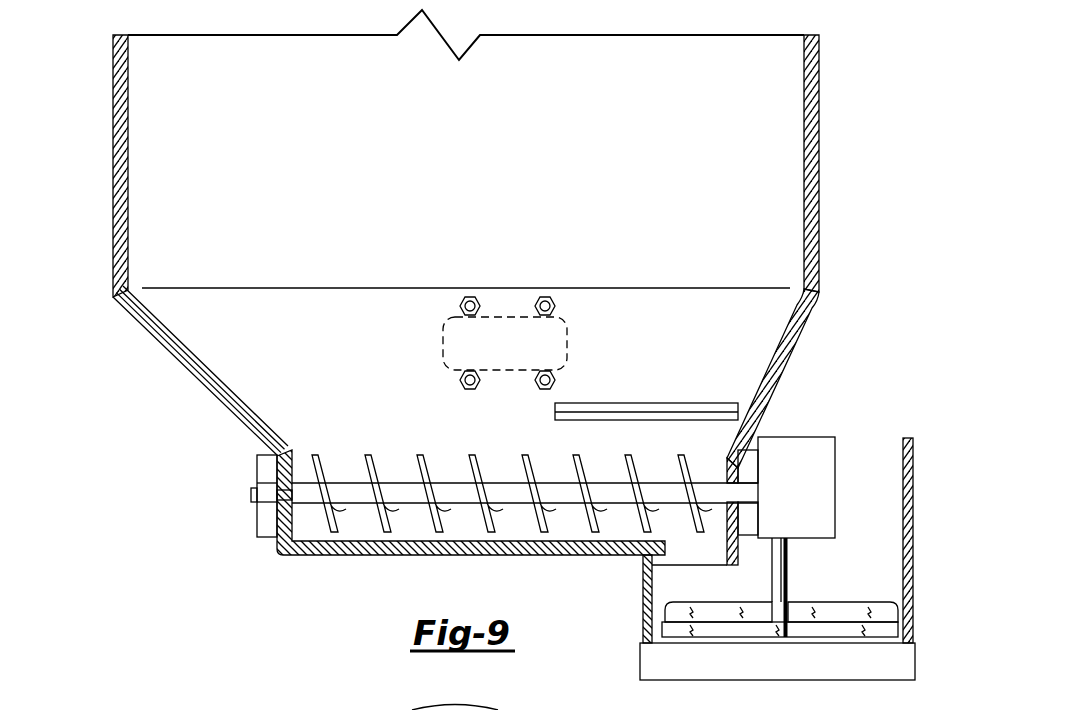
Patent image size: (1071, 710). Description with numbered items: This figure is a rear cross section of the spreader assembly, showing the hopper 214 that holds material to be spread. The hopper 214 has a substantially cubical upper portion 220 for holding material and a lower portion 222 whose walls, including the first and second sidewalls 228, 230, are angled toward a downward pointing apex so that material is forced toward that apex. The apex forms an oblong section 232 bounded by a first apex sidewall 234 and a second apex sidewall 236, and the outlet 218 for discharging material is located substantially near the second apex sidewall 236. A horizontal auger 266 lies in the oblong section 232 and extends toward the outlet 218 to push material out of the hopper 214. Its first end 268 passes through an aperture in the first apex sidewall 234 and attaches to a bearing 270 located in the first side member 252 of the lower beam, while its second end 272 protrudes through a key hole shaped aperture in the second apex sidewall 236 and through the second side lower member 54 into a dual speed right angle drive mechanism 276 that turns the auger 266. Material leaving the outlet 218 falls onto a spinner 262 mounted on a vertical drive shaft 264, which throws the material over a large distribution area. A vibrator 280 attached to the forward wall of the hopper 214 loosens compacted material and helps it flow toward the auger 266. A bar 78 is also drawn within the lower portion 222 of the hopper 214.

The hopper 214 is at (113, 150).
The upper portion 220 is at (443, 170).
The lower portion 222 is at (398, 403).
The first sidewall 228 is at (179, 361).
The second sidewall 230 is at (800, 337).
The oblong section 232 is at (523, 557).
The first apex sidewall 234 is at (277, 540).
The second apex sidewall 236 is at (738, 556).
The outlet 218 is at (683, 568).
The first side member 252 is at (256, 466).
The bearing 270 is at (251, 494).
The first end 268 is at (292, 498).
The horizontal auger 266 is at (455, 456).
The second end 272 is at (724, 459).
The second side lower member 54 is at (752, 450).
The dual speed right angle drive mechanism 276 is at (836, 492).
The vertical drive shaft 264 is at (788, 570).
The spinner 262 is at (818, 598).
The vibrator 280 is at (567, 348).
The level sensor bar 78 is at (655, 403).